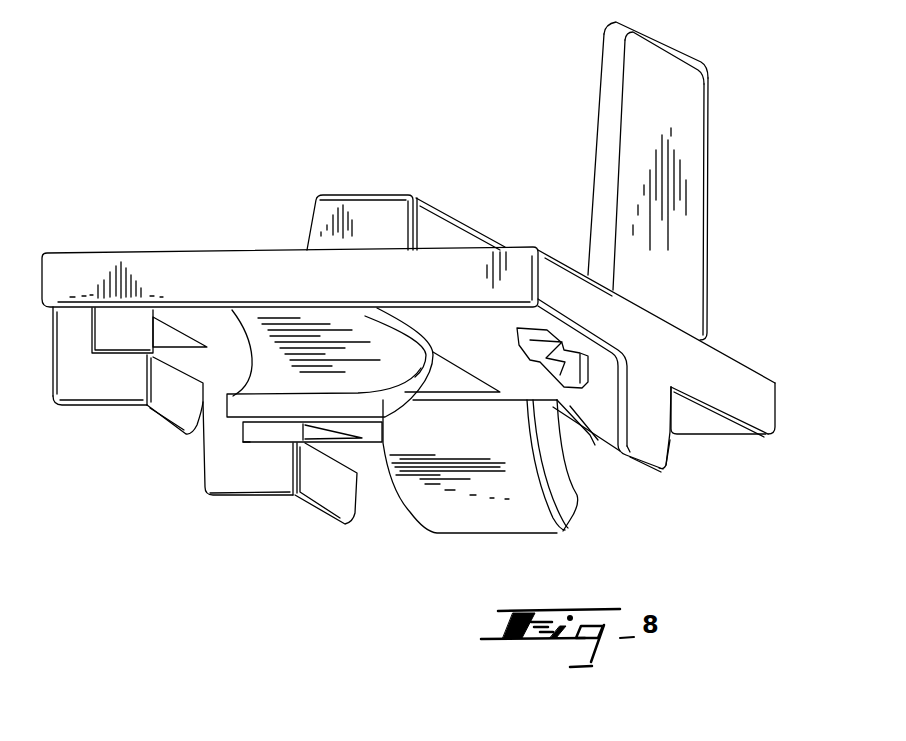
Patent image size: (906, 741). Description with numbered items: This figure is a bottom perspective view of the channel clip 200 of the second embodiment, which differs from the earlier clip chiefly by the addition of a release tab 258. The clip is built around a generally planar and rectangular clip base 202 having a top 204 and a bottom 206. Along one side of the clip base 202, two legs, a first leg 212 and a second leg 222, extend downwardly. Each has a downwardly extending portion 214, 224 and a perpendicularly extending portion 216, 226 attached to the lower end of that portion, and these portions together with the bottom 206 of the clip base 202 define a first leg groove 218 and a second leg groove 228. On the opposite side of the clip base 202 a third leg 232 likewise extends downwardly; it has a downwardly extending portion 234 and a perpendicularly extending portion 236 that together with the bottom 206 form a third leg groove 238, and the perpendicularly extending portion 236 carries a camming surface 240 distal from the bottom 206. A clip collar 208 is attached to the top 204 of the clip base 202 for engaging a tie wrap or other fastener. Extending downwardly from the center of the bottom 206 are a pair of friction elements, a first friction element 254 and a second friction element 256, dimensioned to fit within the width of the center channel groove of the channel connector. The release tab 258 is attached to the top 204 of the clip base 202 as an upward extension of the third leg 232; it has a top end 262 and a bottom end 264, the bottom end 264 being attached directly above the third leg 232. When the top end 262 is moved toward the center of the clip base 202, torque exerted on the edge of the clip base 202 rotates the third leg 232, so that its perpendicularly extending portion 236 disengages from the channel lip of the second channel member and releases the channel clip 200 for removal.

The channel clip 200 is at (276, 130).
The clip base 202 is at (745, 377).
The top 204 is at (748, 375).
The bottom 206 is at (727, 420).
The clip collar 208 is at (373, 194).
The first leg 212 is at (76, 406).
The downwardly extending portion 214 is at (48, 340).
The perpendicularly extending portion 216 is at (107, 415).
The first leg groove 218 is at (118, 330).
The second leg 222 is at (258, 437).
The downwardly extending portion 224 is at (212, 460).
The perpendicularly extending portion 226 is at (290, 513).
The second leg groove 228 is at (263, 440).
The third leg 232 is at (662, 470).
The downwardly extending portion 234 is at (670, 433).
The perpendicularly extending portion 236 is at (640, 455).
The third leg groove 238 is at (587, 383).
The camming surface 240 is at (578, 420).
The first friction element 254 is at (325, 372).
The second friction element 256 is at (478, 517).
The release tab 258 is at (600, 72).
The top end 262 is at (679, 43).
The bottom end 264 is at (592, 242).